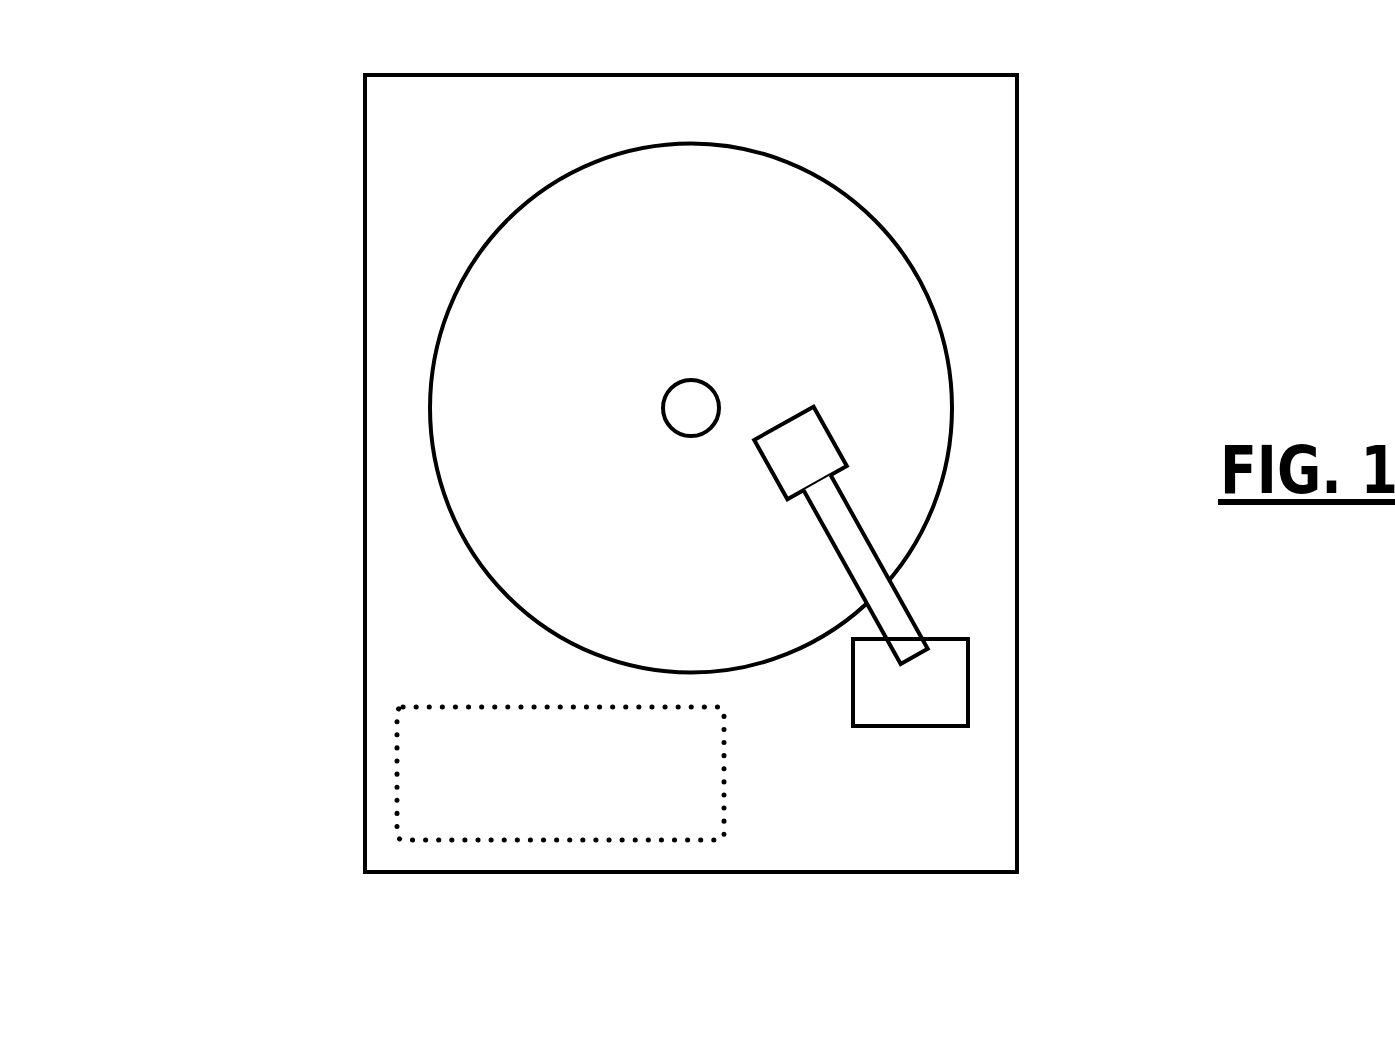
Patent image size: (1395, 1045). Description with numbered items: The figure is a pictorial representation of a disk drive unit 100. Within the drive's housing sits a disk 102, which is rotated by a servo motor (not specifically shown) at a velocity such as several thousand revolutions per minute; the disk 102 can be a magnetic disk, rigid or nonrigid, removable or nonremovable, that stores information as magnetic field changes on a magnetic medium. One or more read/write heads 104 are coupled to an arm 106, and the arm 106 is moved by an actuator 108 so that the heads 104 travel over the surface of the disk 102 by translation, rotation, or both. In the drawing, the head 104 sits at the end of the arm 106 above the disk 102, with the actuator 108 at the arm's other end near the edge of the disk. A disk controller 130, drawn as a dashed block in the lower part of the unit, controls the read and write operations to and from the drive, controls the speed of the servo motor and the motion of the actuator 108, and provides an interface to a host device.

The disk drive unit 100 is at (291, 514).
The disk 102 is at (530, 202).
The read/write head 104 is at (875, 448).
The arm 106 is at (873, 547).
The actuator 108 is at (853, 693).
The disk controller 130 is at (560, 773).